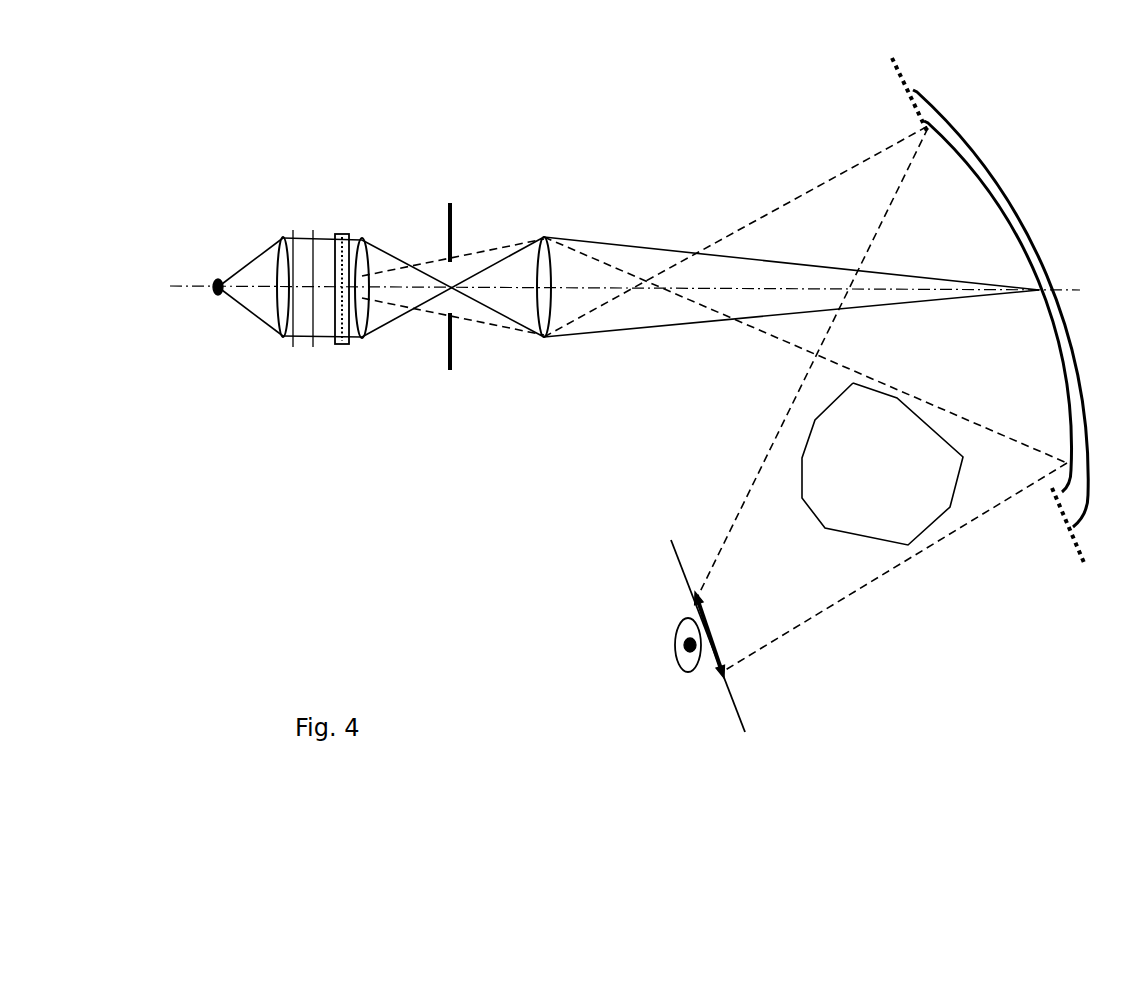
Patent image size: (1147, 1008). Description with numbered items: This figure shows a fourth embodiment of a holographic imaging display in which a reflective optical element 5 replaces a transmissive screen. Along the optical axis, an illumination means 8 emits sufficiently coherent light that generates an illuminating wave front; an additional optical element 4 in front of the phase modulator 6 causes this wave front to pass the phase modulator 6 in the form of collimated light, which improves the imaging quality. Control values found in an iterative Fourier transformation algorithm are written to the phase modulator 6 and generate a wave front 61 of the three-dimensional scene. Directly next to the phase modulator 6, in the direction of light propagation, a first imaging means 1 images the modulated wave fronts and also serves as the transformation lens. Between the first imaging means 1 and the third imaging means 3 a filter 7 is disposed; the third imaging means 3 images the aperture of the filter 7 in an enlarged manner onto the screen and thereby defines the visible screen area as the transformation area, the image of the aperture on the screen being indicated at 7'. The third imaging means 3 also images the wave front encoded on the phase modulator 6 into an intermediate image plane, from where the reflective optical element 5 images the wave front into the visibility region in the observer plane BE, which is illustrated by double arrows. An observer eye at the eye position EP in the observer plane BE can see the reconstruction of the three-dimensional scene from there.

The illumination means 8 is at (222, 278).
The additional optical element 4 is at (280, 236).
The wave front 61 is at (333, 330).
The phase modulator 6 is at (343, 345).
The first imaging means 1 is at (367, 333).
The filter 7 is at (474, 331).
The third imaging means 3 is at (543, 333).
The reflective optical element 5 is at (965, 137).
The aperture image 7' is at (1006, 364).
The observer plane BE is at (694, 621).
The eye position EP is at (688, 645).